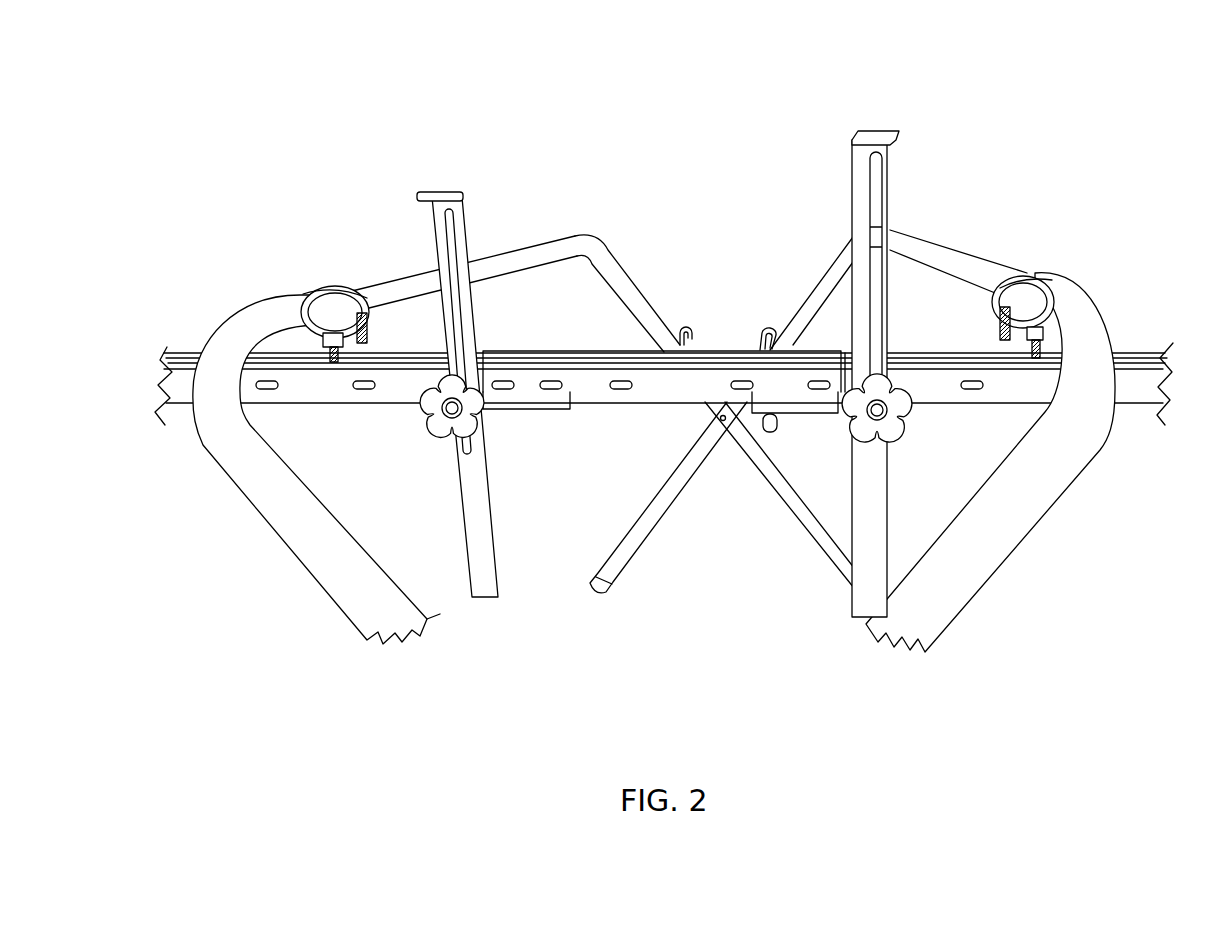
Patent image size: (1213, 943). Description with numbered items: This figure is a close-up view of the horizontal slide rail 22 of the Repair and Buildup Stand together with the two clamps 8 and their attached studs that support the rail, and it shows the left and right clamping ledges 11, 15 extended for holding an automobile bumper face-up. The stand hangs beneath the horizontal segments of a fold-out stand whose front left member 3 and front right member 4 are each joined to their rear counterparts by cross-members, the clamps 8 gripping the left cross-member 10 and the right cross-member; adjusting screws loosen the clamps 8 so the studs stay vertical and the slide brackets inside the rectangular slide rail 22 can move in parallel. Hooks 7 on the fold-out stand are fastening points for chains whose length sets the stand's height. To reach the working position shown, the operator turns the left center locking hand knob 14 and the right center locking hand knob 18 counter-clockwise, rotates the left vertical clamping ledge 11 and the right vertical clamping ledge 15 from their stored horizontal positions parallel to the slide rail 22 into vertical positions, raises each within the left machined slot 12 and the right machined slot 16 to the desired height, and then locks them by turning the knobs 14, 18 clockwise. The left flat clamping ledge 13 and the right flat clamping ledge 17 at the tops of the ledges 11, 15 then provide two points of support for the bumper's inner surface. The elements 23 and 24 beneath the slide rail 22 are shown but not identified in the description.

The front left member 3 is at (288, 545).
The front right member 4 is at (997, 572).
The hooks 7 is at (757, 322).
The clamp 8 is at (327, 291).
The left cross-member 10 is at (510, 247).
The left vertical clamping ledge 11 is at (490, 594).
The left machined slot 12 is at (447, 237).
The left flat clamping ledge 13 is at (413, 193).
The left center locking hand knob 14 is at (470, 417).
The right vertical clamping ledge 15 is at (873, 585).
The right machined slot 16 is at (872, 198).
The right flat clamping ledge 17 is at (880, 131).
The right center locking hand knob 18 is at (850, 415).
The horizontal slide rail 22 is at (660, 362).
The first bracket 23 is at (543, 397).
The second bracket 24 is at (768, 406).